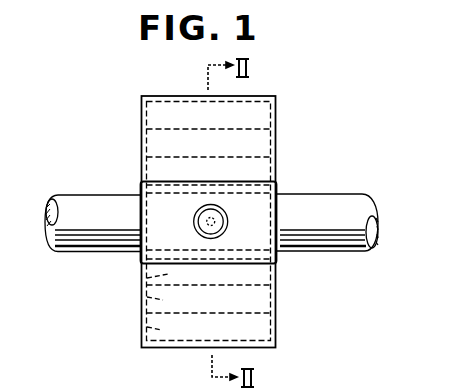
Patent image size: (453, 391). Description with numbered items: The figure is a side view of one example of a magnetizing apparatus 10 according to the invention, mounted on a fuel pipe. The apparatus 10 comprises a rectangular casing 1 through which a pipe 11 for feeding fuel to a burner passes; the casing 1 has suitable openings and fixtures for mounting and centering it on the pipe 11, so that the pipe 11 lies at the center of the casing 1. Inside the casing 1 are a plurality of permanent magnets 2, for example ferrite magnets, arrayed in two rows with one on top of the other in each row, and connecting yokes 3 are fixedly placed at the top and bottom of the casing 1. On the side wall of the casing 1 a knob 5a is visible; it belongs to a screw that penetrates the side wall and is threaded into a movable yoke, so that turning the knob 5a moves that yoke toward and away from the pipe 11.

The casing 1 is at (141, 122).
The permanent magnets 2 is at (163, 300).
The connecting yokes 3 is at (162, 330).
The knob 5a is at (220, 217).
The magnetizing apparatus 10 is at (304, 56).
The pipe 11 is at (67, 195).